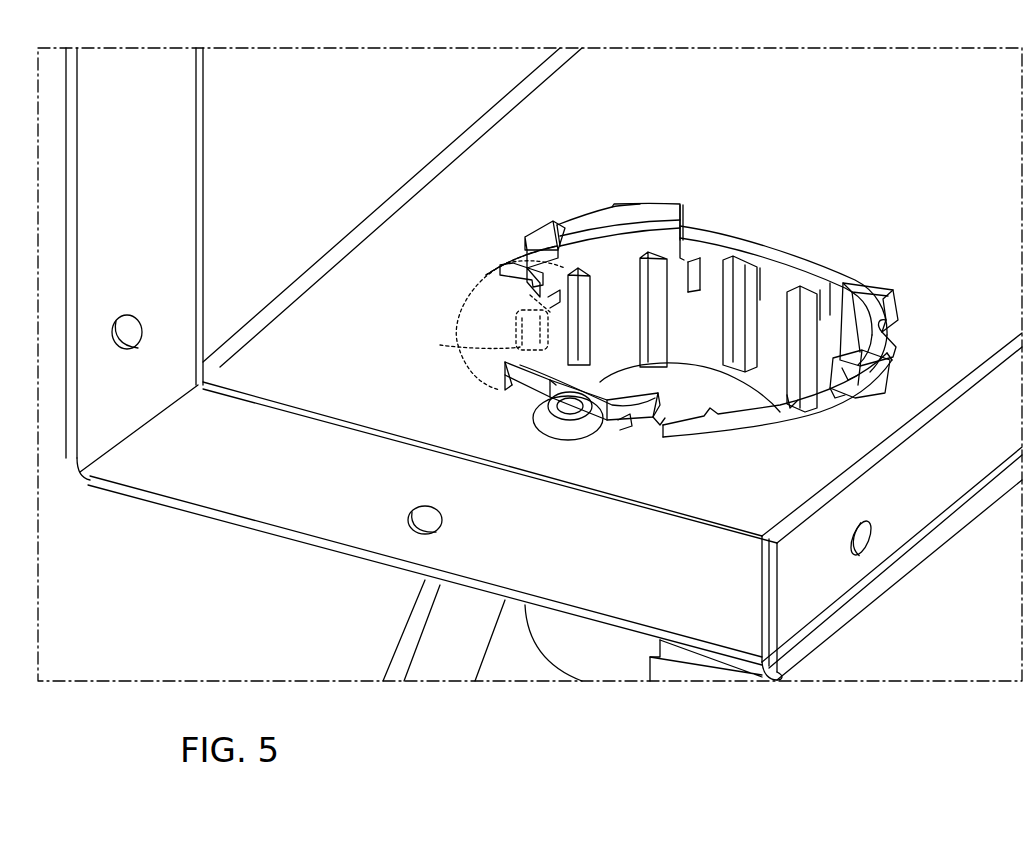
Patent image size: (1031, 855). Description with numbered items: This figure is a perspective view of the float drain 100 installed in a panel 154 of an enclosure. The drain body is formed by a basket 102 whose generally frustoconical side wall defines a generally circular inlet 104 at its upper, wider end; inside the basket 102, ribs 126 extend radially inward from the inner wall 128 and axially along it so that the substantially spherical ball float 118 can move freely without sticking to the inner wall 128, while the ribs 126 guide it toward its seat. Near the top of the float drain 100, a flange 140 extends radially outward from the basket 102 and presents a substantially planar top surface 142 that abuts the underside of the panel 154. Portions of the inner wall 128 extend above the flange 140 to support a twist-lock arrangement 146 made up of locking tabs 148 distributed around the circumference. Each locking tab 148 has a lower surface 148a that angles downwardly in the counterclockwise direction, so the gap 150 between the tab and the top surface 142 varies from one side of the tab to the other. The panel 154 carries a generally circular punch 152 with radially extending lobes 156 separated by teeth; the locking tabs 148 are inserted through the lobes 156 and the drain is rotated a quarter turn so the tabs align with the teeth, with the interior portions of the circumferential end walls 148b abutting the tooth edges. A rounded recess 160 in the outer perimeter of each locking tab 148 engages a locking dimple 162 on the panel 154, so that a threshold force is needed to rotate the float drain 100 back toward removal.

The float drain 100 is at (868, 135).
The basket 102 is at (600, 655).
The inlet 104 is at (712, 256).
The ball float 118 is at (752, 388).
The ribs 126 is at (582, 316).
The inner wall 128 is at (558, 297).
The flange 140 is at (822, 290).
The top surface 142 is at (755, 240).
The twist-lock arrangement 146 is at (696, 330).
The locking tabs 148 is at (540, 223).
The lower surfaces 148a is at (520, 290).
The circumferential end walls 148b is at (683, 238).
The gaps 150 is at (518, 258).
The punch 152 is at (742, 440).
The panel 154 is at (556, 117).
The lobes 156 is at (790, 270).
The rounded recess 160 is at (585, 198).
The locking dimple 162 is at (560, 422).